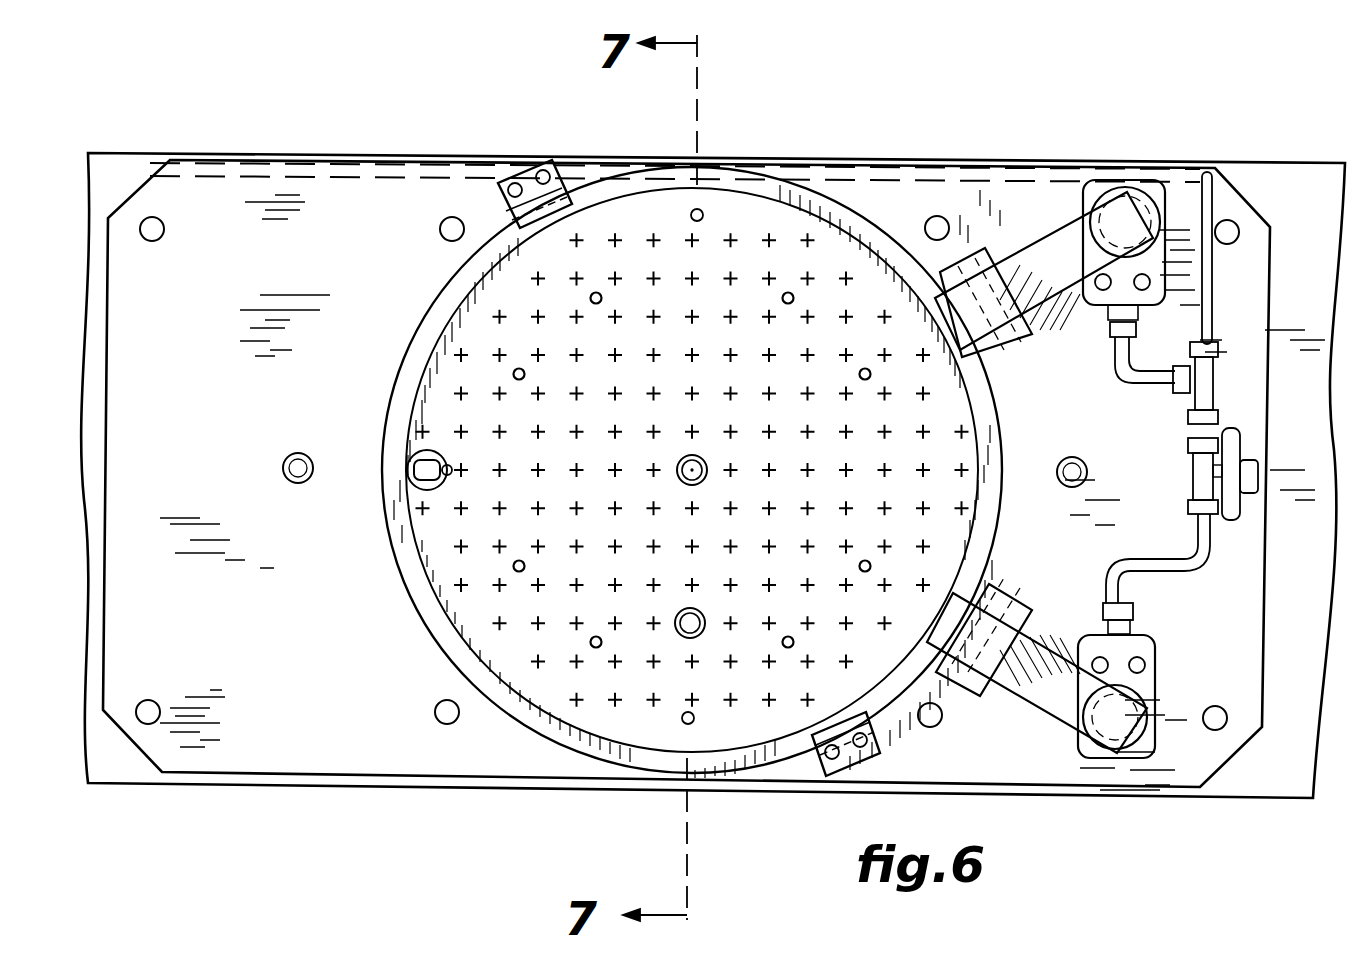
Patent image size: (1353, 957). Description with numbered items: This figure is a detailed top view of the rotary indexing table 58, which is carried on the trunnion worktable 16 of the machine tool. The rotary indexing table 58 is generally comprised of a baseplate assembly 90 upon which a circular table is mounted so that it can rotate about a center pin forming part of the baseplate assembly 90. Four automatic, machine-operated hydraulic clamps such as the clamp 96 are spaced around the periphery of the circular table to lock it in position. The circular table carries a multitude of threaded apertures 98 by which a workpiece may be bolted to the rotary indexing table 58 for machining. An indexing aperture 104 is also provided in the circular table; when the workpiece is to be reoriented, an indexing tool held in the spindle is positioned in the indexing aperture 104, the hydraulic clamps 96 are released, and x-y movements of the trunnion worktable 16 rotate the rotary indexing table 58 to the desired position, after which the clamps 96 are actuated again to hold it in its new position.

The trunnion worktable 16 is at (1262, 792).
The rotary indexing table 58 is at (422, 864).
The baseplate assembly 90 is at (365, 665).
The hydraulic clamp 96 is at (1060, 708).
The threaded apertures 98 is at (540, 316).
The indexing aperture 104 is at (426, 462).